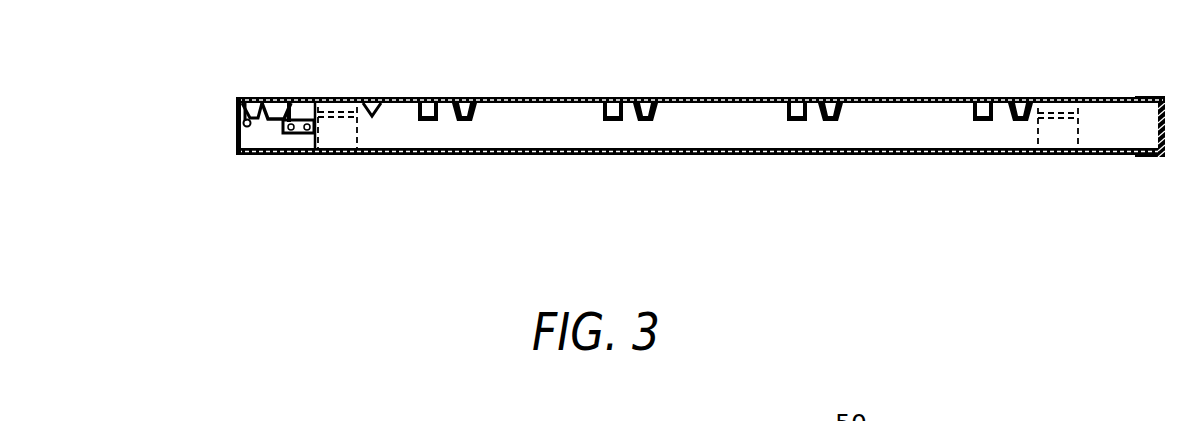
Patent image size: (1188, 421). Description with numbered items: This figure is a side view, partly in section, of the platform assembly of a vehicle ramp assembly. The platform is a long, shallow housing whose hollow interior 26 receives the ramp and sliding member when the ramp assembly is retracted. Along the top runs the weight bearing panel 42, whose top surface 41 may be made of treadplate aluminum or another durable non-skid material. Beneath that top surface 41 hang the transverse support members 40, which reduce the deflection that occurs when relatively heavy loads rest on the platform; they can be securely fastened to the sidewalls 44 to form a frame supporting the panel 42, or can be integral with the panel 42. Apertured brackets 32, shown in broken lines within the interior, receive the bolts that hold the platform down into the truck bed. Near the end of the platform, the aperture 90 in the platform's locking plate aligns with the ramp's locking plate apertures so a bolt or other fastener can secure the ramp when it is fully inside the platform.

The hollow interior 26 is at (707, 133).
The apertured bracket 32 is at (357, 127).
The transverse support member 40 is at (462, 102).
The top surface 41 is at (750, 100).
The weight bearing panel 42 is at (363, 101).
The sidewall 44 is at (238, 138).
The aperture 90 is at (238, 133).